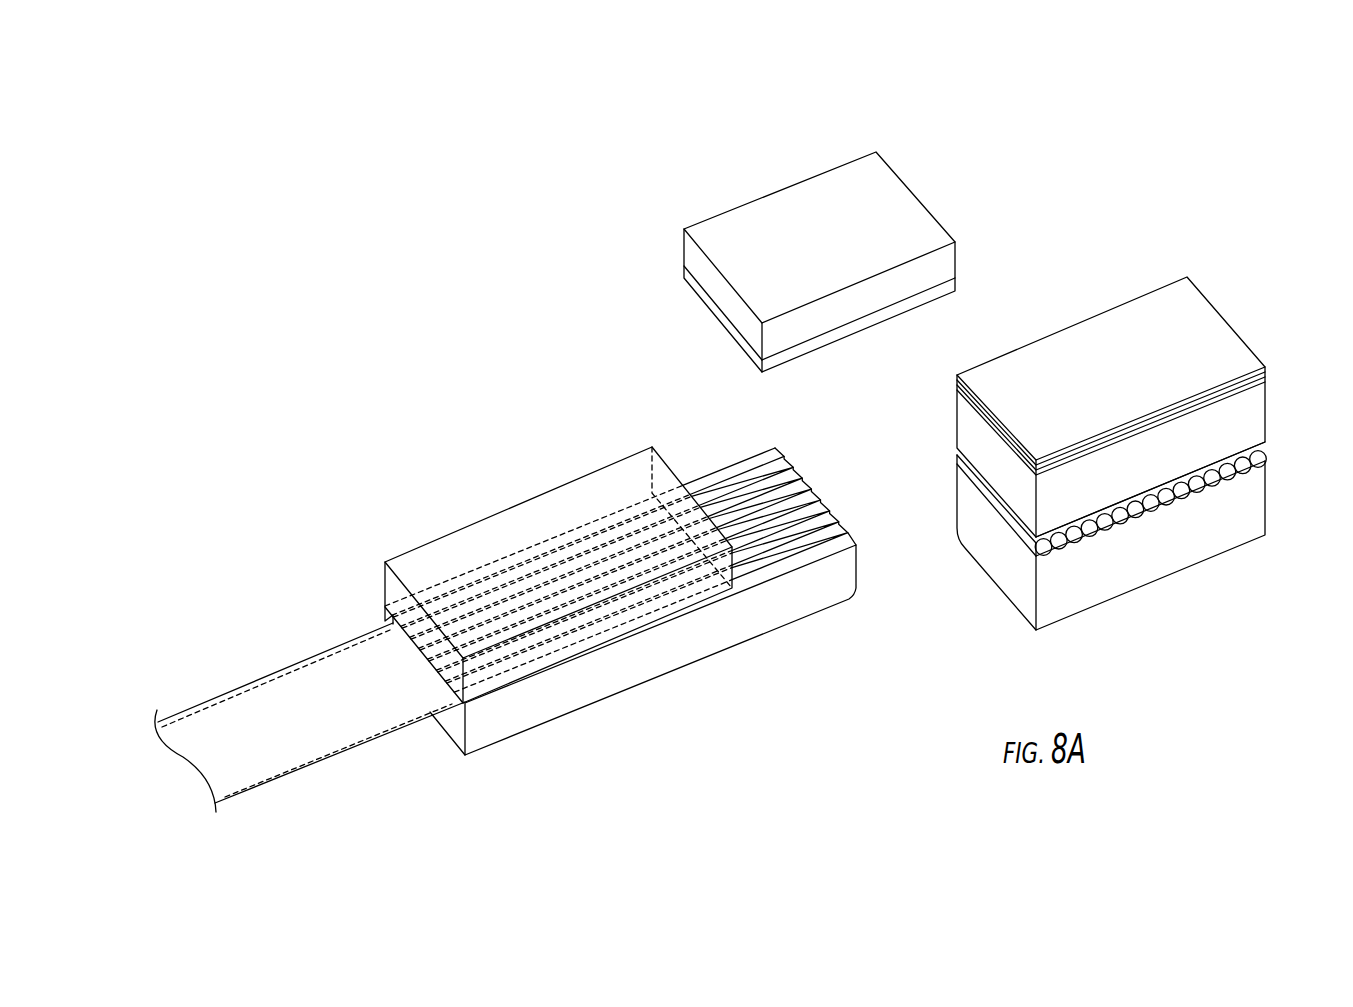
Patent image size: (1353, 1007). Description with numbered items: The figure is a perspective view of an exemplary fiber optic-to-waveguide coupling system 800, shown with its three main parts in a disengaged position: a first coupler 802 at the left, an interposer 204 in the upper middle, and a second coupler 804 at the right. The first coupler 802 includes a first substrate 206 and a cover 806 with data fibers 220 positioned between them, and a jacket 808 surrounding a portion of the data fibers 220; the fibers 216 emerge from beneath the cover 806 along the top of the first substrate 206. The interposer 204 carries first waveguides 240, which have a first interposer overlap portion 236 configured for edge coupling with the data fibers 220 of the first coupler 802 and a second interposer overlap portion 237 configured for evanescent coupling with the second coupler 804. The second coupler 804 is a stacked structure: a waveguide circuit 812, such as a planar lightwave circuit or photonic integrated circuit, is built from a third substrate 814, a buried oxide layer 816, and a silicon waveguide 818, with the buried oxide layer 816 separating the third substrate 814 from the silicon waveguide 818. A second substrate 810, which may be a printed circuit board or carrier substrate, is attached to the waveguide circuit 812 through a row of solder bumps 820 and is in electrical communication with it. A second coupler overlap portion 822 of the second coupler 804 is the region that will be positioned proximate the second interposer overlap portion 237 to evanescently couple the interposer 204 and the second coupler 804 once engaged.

The fiber optic-to-waveguide coupling system 800 is at (1156, 138).
The interposer 204 is at (710, 218).
The first waveguides 240 is at (684, 271).
The first interposer overlap portion 236 is at (858, 335).
The second interposer overlap portion 237 is at (952, 295).
The second coupler 804 is at (1152, 453).
The silicon waveguide 818 is at (1266, 368).
The buried oxide layer 816 is at (1266, 376).
The third substrate 814 is at (1266, 434).
The waveguide circuit 812 is at (1266, 420).
The solder bumps 820 is at (1266, 453).
The second substrate 810 is at (1266, 500).
The second coupler overlap portion 822 is at (1064, 312).
The first coupler 802 is at (505, 613).
The first substrate 206 is at (638, 668).
The optical fibers 216 is at (853, 598).
The cover 806 is at (558, 560).
The data fibers 220 is at (668, 608).
The jacket 808 is at (283, 668).